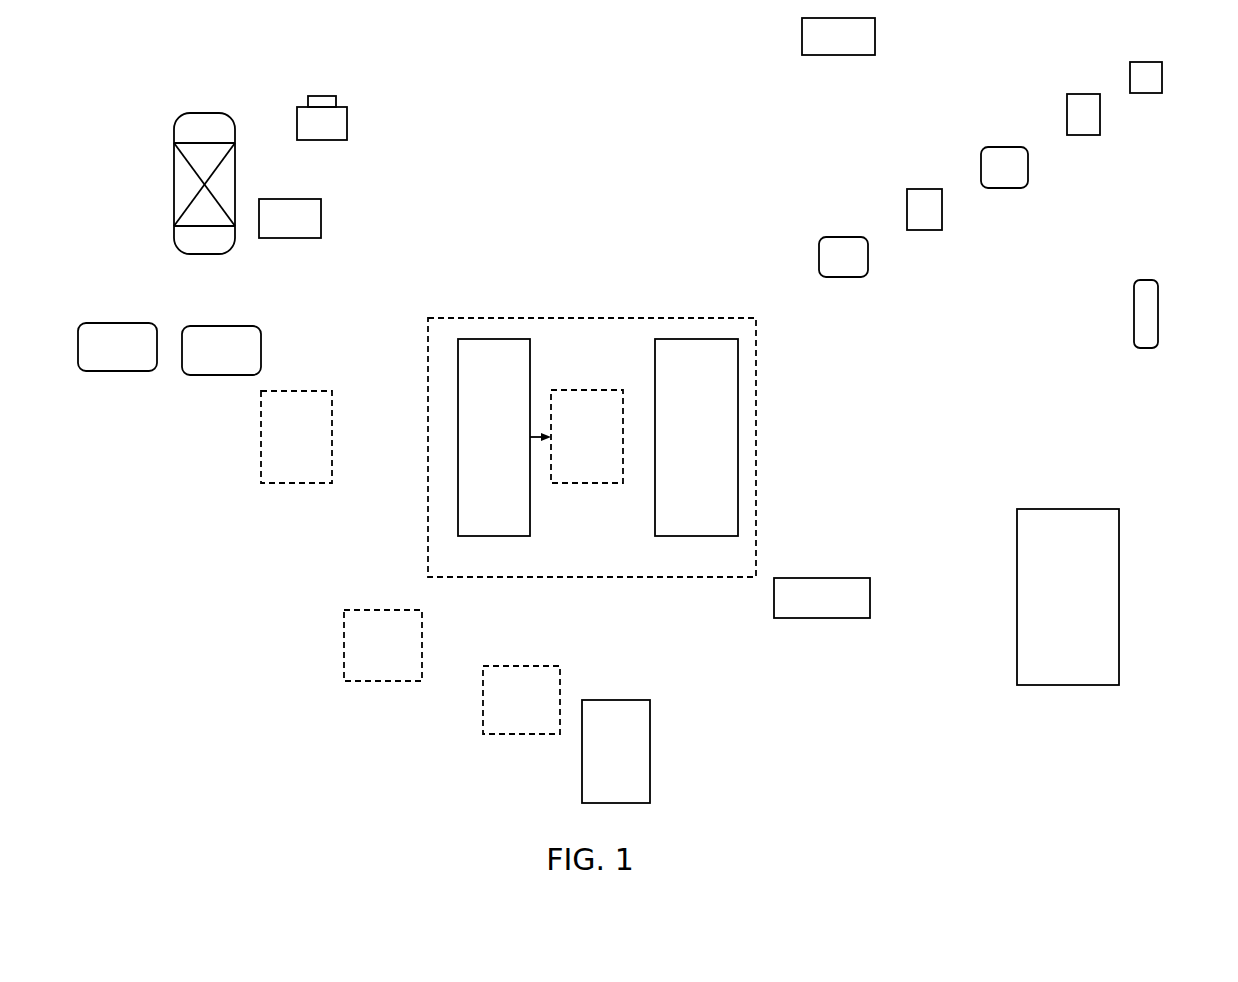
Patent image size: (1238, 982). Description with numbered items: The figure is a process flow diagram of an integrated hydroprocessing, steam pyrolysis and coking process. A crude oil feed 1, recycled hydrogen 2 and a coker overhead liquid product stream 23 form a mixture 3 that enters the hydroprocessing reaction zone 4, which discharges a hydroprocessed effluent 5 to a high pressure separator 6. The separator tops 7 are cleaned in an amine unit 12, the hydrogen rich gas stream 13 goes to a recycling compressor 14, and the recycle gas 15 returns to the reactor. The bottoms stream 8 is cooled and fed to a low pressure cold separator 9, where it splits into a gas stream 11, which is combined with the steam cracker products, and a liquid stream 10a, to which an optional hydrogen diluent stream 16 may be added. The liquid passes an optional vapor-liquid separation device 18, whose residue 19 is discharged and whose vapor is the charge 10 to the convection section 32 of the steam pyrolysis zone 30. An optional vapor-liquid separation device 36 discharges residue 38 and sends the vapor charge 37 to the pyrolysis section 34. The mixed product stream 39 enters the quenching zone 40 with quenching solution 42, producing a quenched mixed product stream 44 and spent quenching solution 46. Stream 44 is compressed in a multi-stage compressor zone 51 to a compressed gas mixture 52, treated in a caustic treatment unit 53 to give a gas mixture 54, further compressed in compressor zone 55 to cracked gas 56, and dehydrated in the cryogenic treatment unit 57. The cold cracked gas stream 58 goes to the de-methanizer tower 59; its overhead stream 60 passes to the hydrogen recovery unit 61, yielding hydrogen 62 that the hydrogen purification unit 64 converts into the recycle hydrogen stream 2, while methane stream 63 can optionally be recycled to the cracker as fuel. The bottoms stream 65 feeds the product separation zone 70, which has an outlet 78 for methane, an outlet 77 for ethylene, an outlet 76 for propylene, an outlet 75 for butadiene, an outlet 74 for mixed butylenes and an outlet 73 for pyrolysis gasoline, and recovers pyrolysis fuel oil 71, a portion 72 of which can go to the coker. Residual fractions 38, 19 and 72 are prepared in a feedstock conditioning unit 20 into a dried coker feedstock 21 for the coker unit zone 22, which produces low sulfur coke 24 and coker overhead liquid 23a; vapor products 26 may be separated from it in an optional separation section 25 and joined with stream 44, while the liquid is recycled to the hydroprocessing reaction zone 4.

The crude oil feed 1 is at (195, 35).
The hydrogen stream 2 is at (802, 35).
The mixture 3 is at (205, 35).
The hydroprocessing reaction zone 4 is at (199, 137).
The hydroprocessed effluent 5 is at (70, 347).
The high pressure separator 6 is at (112, 359).
The separator tops 7 is at (290, 246).
The bottoms stream 8 is at (174, 350).
The low pressure cold separator 9 is at (217, 359).
The charge to the convection section 10 is at (450, 437).
The liquid stream 10a is at (252, 437).
The gas stream 11 is at (811, 257).
The amine unit 12 is at (281, 227).
The hydrogen rich gas stream 13 is at (322, 148).
The recycling compressor 14 is at (313, 132).
The recycle gas 15 is at (215, 53).
The hydrogen diluent stream 16 is at (412, 445).
The vapor-liquid separation device 18 is at (288, 441).
The residue 19 is at (510, 593).
The feedstock conditioning unit 20 is at (507, 706).
The dried coker feedstock 21 is at (574, 751).
The coker unit zone 22 is at (604, 763).
The coker overhead liquid product stream 23 is at (160, 45).
The coker overhead liquid 23a is at (422, 645).
The coke 24 is at (616, 803).
The separation section 25 is at (368, 651).
The vapor products 26 is at (383, 267).
The steam pyrolysis zone 30 is at (438, 575).
The convection section 32 is at (481, 445).
The pyrolysis section 34 is at (688, 445).
The vapor-liquid separation device 36 is at (577, 445).
The charge to the pyrolysis section 37 is at (623, 437).
The residue 38 is at (522, 657).
The mixed product stream 39 is at (766, 598).
The quenching zone 40 is at (809, 606).
The quenching solution 42 is at (802, 570).
The quenched mixed product stream 44 is at (787, 257).
The spent quenching solution 46 is at (850, 618).
The multi-stage compressor zone 51 is at (834, 265).
The compressed gas mixture 52 is at (899, 210).
The caustic treatment unit 53 is at (915, 217).
The gas mixture 54 is at (973, 168).
The compressor zone 55 is at (996, 175).
The cracked gas 56 is at (1059, 115).
The cryogenic treatment unit 57 is at (1074, 122).
The cold cracked gas stream 58 is at (1100, 115).
The de-methanizer tower 59 is at (1137, 322).
The overhead stream 60 is at (1146, 280).
The hydrogen recovery unit 61 is at (1137, 86).
The hydrogen stream 62 is at (1146, 62).
The methane stream 63 is at (592, 310).
The hydrogen purification unit 64 is at (829, 46).
The bottoms stream 65 is at (1009, 598).
The product separation zone 70 is at (1059, 598).
The pyrolysis fuel oil 71 is at (1182, 747).
The portion of pyrolysis fuel oil 72 is at (533, 608).
The outlet for pyrolysis gasoline 73 is at (1119, 645).
The outlet for mixed butylenes 74 is at (1119, 624).
The outlet for butadiene 75 is at (1119, 603).
The outlet for propylene 76 is at (1119, 583).
The outlet for ethylene 77 is at (1119, 562).
The outlet for methane 78 is at (1119, 541).